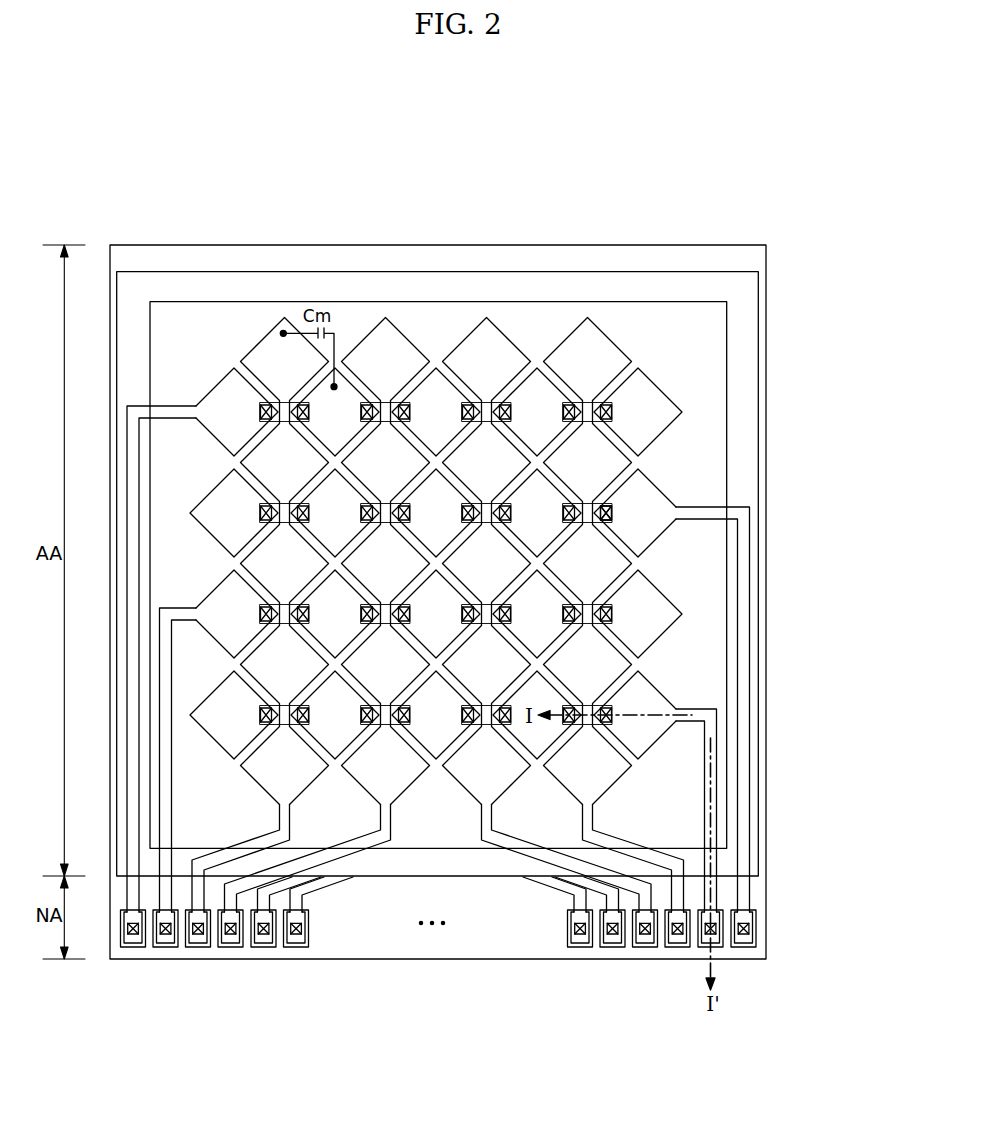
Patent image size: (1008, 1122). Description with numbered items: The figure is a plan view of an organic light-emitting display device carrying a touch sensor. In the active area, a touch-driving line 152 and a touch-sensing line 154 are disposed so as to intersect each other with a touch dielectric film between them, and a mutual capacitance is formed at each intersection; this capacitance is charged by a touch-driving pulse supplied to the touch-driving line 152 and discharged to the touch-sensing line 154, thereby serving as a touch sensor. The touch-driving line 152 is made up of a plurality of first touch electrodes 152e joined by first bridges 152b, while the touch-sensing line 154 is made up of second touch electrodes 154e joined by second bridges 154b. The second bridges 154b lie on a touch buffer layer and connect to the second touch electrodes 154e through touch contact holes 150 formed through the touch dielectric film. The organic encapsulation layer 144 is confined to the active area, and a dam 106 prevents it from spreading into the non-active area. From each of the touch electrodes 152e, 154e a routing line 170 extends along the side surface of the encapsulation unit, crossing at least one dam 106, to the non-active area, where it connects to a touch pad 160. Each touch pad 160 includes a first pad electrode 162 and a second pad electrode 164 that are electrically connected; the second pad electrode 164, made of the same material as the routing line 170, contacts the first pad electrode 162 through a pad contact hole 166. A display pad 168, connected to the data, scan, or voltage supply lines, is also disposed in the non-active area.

The dam 106 is at (762, 856).
The organic encapsulation layer 144 is at (727, 773).
The touch contact hole 150 is at (493, 401).
The touch-driving line 152 is at (452, 468).
The first touch electrode 152e is at (572, 350).
The first bridge 152b is at (598, 400).
The touch-sensing line 154 is at (538, 563).
The second touch electrode 154e is at (667, 497).
The second bridge 154b is at (617, 511).
The routing line 170 is at (750, 690).
The touch pad 160 is at (775, 984).
The first pad electrode 162 is at (742, 946).
The second pad electrode 164 is at (753, 950).
The pad contact hole 166 is at (751, 926).
The display pad 168 is at (565, 928).